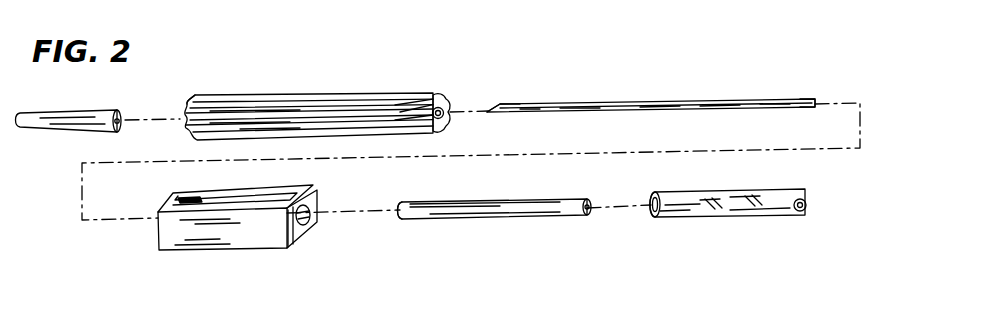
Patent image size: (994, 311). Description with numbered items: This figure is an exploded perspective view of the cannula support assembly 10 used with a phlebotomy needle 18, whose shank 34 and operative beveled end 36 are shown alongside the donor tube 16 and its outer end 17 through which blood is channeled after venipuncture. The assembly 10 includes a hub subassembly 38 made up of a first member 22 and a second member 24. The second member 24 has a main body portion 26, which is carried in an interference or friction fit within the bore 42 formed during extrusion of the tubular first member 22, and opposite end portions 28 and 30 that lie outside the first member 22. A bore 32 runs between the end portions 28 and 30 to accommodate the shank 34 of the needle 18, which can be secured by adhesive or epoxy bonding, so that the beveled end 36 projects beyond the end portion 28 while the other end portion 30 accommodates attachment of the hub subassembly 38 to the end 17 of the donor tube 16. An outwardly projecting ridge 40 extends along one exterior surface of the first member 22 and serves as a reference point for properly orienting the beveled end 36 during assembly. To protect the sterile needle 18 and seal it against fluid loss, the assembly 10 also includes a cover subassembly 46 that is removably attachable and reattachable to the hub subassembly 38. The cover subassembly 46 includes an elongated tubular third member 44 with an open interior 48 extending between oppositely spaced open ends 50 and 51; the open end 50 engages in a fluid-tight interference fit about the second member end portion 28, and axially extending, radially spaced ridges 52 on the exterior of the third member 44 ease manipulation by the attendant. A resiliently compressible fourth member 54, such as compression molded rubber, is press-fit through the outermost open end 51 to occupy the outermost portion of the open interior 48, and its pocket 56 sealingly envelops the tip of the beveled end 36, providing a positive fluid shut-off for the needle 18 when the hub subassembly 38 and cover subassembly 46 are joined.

The cannula support assembly 10 is at (688, 77).
The donor tube 16 is at (757, 214).
The outer end of donor tube 17 is at (660, 214).
The phlebotomy needle 18 is at (610, 101).
The first member 22 is at (240, 240).
The second member 24 is at (520, 213).
The main body portion 26 is at (470, 203).
The end portion 28 is at (408, 221).
The end portion 30 is at (585, 203).
The bore 32 is at (588, 216).
The shank 34 is at (760, 98).
The beveled end 36 is at (500, 104).
The hub subassembly 38 is at (237, 247).
The ridge 40 is at (198, 194).
The bore 42 is at (318, 207).
The third member 44 is at (340, 104).
The cover subassembly 46 is at (309, 88).
The open interior 48 is at (447, 106).
The open end 50 is at (447, 117).
The open end 51 is at (185, 104).
The ridges 52 is at (398, 107).
The fourth member 54 is at (70, 112).
The pocket 56 is at (116, 130).